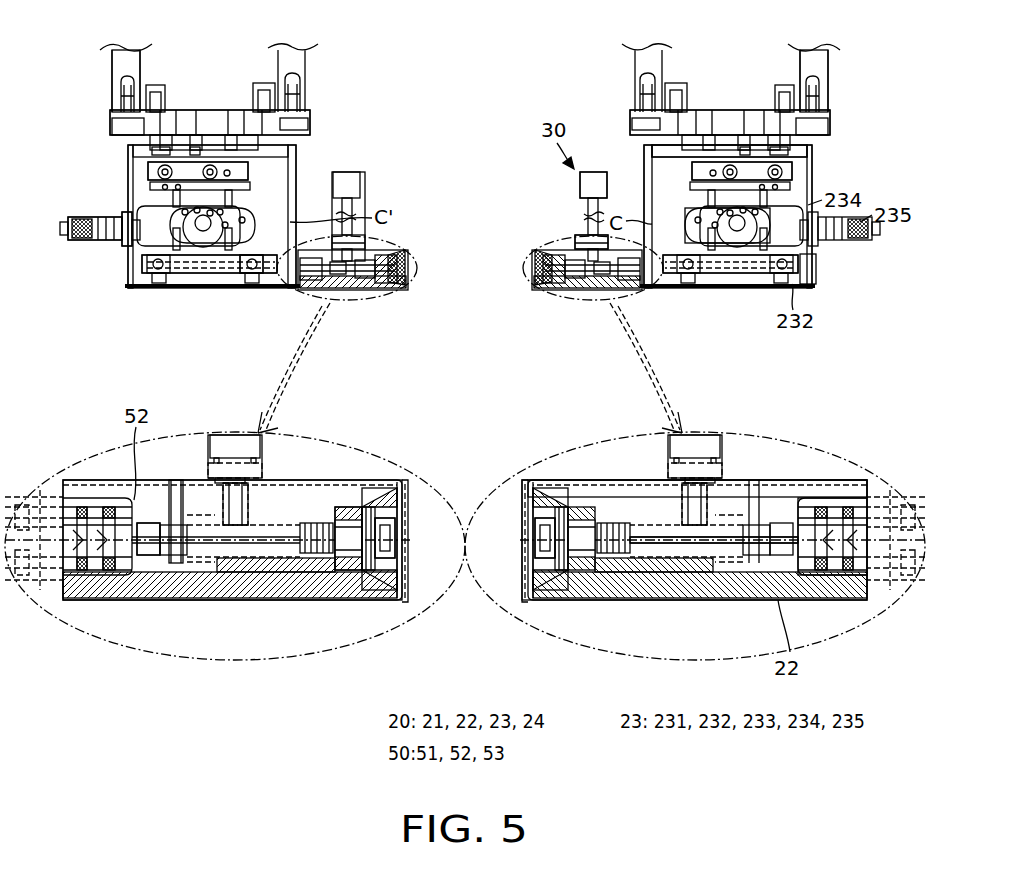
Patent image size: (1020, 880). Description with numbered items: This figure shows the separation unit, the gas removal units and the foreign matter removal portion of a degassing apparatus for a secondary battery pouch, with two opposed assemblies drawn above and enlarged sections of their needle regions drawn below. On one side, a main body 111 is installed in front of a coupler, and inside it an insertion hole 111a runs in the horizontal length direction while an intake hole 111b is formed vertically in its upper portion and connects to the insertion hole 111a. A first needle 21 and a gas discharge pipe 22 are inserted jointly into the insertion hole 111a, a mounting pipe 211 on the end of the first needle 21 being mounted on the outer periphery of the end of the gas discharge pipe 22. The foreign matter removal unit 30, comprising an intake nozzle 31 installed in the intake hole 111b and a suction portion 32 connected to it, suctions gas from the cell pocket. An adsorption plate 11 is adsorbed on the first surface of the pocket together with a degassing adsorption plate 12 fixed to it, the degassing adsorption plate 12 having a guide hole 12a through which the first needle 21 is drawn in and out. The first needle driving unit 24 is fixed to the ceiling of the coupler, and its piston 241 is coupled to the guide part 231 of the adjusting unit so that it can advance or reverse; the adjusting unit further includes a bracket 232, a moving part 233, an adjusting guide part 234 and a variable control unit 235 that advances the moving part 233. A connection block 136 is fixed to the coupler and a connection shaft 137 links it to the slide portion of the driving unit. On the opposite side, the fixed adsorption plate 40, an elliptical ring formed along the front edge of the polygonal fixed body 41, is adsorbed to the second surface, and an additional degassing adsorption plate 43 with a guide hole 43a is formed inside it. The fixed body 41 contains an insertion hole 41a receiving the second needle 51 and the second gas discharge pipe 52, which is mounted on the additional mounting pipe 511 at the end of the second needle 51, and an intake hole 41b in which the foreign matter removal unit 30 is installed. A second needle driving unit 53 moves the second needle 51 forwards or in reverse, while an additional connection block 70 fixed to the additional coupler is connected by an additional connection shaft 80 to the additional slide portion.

The adsorption plate 11 is at (528, 492).
The main body 111 is at (578, 486).
The insertion hole 111a is at (655, 530).
The intake hole 111b is at (700, 436).
The degassing adsorption plate 12 is at (522, 538).
The guide hole 12a is at (535, 550).
The first needle 21 is at (677, 600).
The mounting pipe 211 is at (770, 486).
The gas discharge pipe 22 is at (735, 284).
The bracket 232 is at (250, 284).
The guide part 231 is at (770, 215).
The moving part 233 is at (800, 265).
The adjusting guide part 234 is at (130, 240).
The variable control unit 235 is at (78, 214).
The first needle driving unit 24 is at (798, 153).
The piston 241 is at (800, 178).
The foreign matter removal unit 30 is at (361, 173).
The intake nozzle 31 is at (580, 242).
The suction portion 32 is at (578, 183).
The fixed adsorption plate 40 is at (355, 520).
The fixed body 41 is at (190, 600).
The insertion hole 41a is at (218, 535).
The intake hole 41b is at (232, 436).
The additional degassing adsorption plate 43 is at (385, 535).
The guide hole 43a is at (400, 530).
The second needle 51 is at (240, 600).
The additional mounting pipe 511 is at (172, 498).
The second gas discharge pipe 52 is at (205, 284).
The second needle driving unit 53 is at (255, 158).
The additional connection block 70 is at (110, 122).
The additional connection shaft 80 is at (110, 65).
The connection block 136 is at (828, 122).
The connection shaft 137 is at (823, 65).